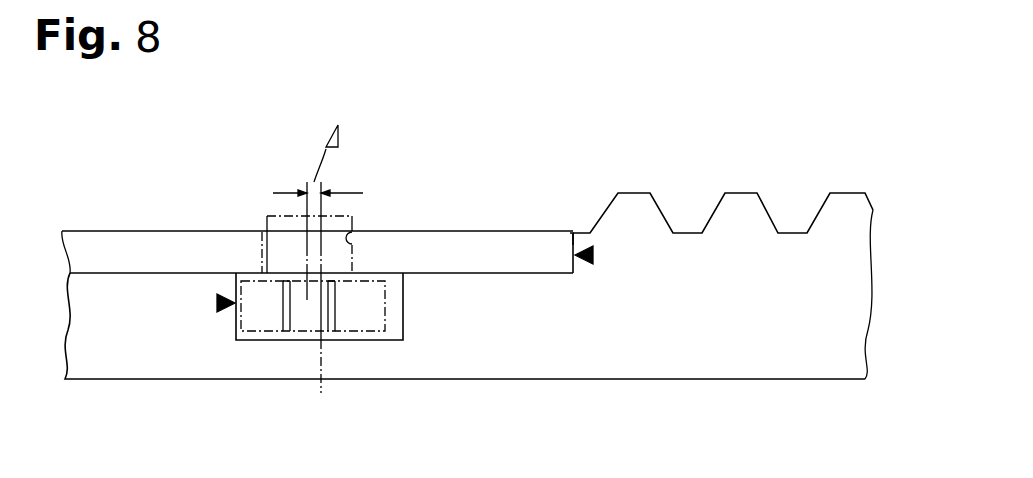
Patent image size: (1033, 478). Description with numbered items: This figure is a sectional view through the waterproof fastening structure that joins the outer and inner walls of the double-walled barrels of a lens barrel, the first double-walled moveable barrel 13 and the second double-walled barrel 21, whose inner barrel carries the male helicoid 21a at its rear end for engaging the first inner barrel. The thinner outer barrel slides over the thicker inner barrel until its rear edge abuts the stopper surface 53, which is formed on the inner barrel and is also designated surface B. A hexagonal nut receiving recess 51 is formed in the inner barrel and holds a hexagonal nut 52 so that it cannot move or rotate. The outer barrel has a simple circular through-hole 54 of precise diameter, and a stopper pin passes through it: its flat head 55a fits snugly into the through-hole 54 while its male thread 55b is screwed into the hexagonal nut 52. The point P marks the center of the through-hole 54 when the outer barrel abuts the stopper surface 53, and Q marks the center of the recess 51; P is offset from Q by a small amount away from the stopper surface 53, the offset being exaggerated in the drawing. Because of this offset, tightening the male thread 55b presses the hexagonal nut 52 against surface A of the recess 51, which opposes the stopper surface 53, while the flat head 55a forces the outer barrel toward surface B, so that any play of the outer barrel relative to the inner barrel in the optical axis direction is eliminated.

The first double-walled moveable barrel 13 is at (128, 243).
The second double-walled barrel 21 is at (469, 289).
The male helicoid 21a is at (723, 181).
The stopper surface 53 is at (572, 240).
The hexagonal nut receiving recess 51 is at (400, 322).
The hexagonal nut 52 is at (266, 322).
The flat head 55a is at (349, 218).
The circular through-hole 54 is at (354, 231).
The male thread 55b is at (303, 320).
The center of the circular through-hole P is at (306, 184).
The center of the hexagonal nut receiving recess Q is at (322, 184).
The surface of the hexagonal nut receiving recess A is at (214, 305).
The stopper surface B is at (596, 255).